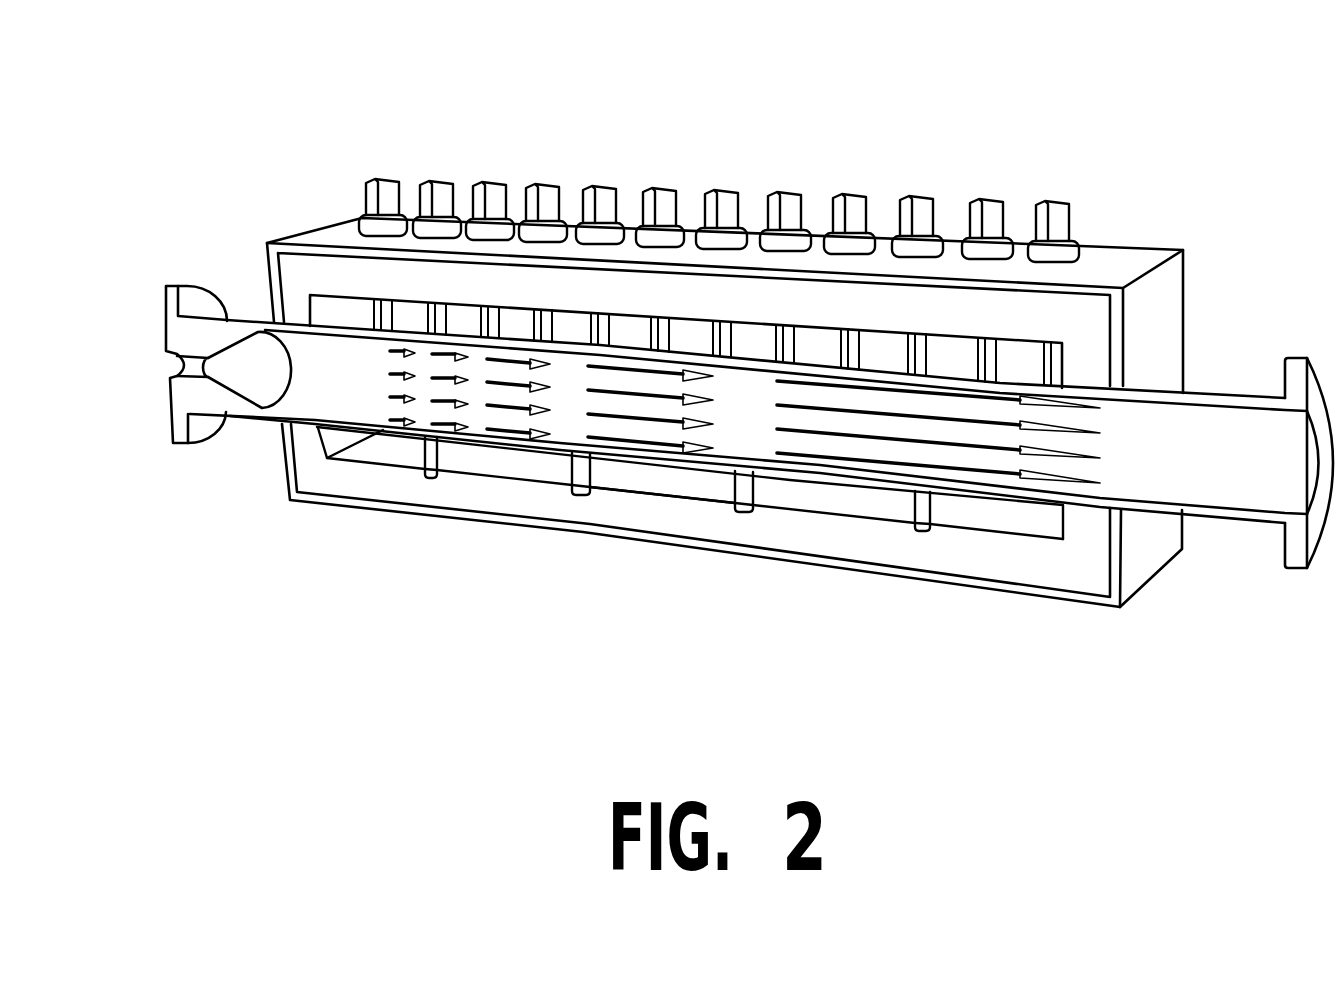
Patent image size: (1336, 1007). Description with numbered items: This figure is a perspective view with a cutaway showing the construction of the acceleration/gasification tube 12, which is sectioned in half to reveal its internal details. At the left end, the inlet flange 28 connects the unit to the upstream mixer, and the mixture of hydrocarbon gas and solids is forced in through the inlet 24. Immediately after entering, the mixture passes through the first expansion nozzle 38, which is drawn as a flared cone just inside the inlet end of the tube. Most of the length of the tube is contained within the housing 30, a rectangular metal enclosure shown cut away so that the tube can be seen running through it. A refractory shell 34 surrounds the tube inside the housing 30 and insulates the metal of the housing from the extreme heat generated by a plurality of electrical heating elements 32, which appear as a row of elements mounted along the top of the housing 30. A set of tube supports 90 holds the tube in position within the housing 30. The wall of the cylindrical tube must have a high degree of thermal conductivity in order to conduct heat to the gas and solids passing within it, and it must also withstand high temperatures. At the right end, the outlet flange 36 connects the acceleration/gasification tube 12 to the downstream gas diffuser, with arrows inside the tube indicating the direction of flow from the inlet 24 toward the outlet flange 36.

The acceleration/gasification tube 12 is at (845, 683).
The inlet 24 is at (175, 367).
The inlet flange 28 is at (165, 285).
The housing 30 is at (1127, 263).
The electrical heating elements 32 is at (657, 193).
The refractory shell 34 is at (433, 497).
The outlet flange 36 is at (1292, 568).
The first expansion nozzle 38 is at (262, 383).
The tube supports 90 is at (733, 493).